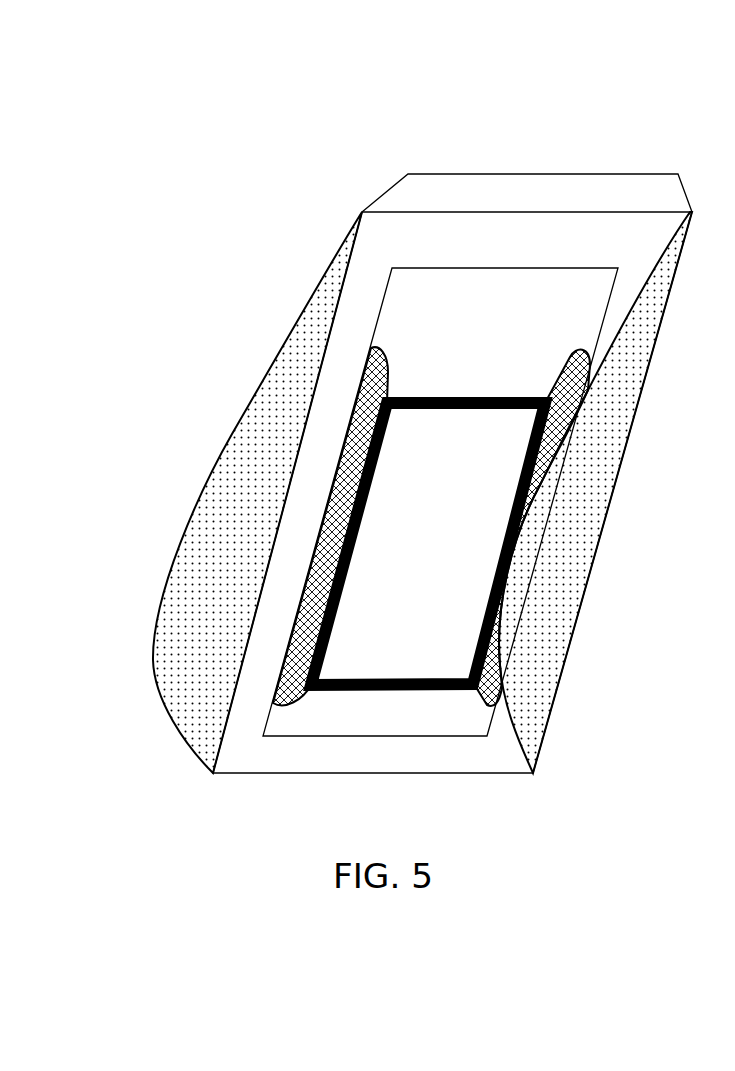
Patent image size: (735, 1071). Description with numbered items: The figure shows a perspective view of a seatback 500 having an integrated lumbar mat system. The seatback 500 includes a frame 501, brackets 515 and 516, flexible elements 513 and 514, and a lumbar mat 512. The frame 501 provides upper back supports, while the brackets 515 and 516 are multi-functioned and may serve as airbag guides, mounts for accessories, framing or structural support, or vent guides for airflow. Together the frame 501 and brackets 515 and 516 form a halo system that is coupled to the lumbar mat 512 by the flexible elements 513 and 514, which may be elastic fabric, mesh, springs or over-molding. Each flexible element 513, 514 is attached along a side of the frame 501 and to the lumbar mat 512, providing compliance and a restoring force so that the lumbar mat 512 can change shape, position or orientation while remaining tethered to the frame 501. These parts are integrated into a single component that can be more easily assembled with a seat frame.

The seatback 500 is at (313, 153).
The frame 501 is at (453, 245).
The lumbar mat 512 is at (462, 402).
The flexible element 513 is at (275, 704).
The flexible element 514 is at (487, 705).
The bracket 515 is at (321, 282).
The bracket 516 is at (573, 778).